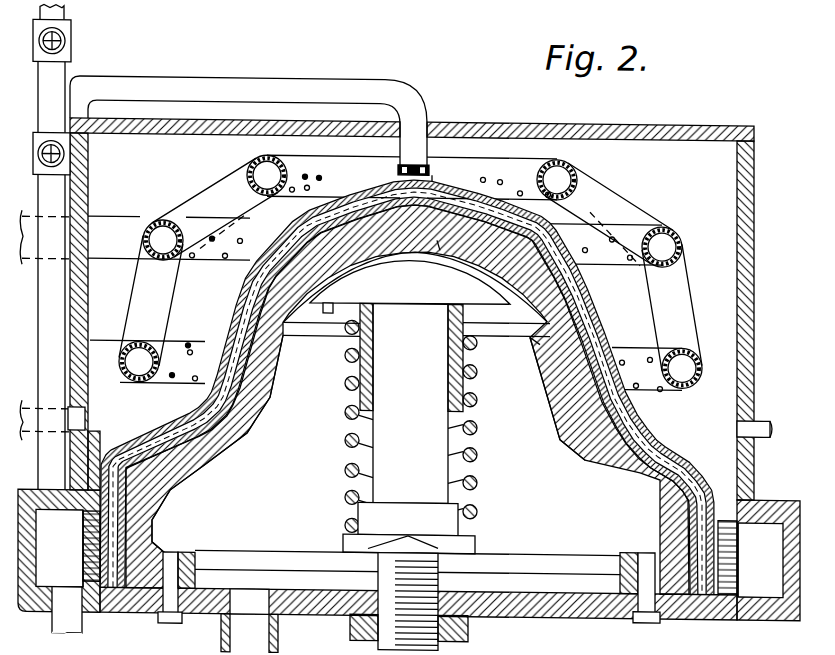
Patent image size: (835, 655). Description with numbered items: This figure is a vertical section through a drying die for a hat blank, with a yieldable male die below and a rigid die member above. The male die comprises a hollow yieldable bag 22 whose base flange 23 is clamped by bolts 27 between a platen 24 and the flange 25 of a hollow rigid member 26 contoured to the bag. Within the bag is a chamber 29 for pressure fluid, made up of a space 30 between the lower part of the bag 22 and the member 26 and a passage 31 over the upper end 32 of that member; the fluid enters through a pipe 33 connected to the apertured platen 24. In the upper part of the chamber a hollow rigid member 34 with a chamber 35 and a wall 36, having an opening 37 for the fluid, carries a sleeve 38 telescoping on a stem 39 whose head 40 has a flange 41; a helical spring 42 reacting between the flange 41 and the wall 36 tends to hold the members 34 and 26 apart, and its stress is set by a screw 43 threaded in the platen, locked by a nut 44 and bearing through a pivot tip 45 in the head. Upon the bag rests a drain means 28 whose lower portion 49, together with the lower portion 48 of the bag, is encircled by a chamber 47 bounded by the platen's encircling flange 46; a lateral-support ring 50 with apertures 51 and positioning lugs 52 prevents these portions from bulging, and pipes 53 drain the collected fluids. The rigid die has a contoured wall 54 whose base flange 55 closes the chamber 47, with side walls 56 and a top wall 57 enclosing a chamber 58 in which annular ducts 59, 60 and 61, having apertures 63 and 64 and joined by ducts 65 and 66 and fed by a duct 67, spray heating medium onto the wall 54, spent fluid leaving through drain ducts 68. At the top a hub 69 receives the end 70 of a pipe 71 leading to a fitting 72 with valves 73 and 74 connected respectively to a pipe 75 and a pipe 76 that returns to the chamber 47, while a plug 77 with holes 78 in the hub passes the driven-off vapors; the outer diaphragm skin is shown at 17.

The diaphragm 17 is at (653, 424).
The hollow member or bag 22 is at (252, 409).
The flange 23 is at (676, 590).
The platen 24 is at (601, 605).
The flange 25 is at (634, 548).
The hollow rigid member 26 is at (563, 433).
The bolts 27 is at (638, 622).
The drain means or fluid escape means 28 is at (566, 186).
The chamber 29 is at (300, 468).
The space 30 is at (622, 457).
The passage 31 is at (488, 322).
The upper end 32 is at (543, 343).
The pipe or duct 33 is at (222, 612).
The hollow rigid member 34 is at (437, 235).
The chamber 35 is at (403, 286).
The wall 36 is at (482, 330).
The opening 37 is at (332, 301).
The sleeve 38 is at (350, 369).
The stem 39 is at (411, 403).
The head 40 is at (433, 527).
The flange 41 is at (510, 549).
The helical spring 42 is at (345, 493).
The screw 43 is at (350, 621).
The lock nut 44 is at (508, 629).
The pivot tip 45 is at (386, 540).
The encircling flange 46 is at (760, 560).
The chamber 47 is at (80, 557).
The lower portion 48 is at (690, 547).
The lower portion 49 is at (683, 502).
The lateral-support ring 50 is at (83, 532).
The apertures 51 is at (87, 571).
The lugs 52 is at (772, 545).
The pipes or ducts 53 is at (80, 626).
The contoured wall 54 is at (625, 280).
The base flange 55 is at (758, 497).
The side walls 56 is at (427, 295).
The cover plate or top wall 57 is at (724, 124).
The chamber 58 is at (687, 189).
The annular duct 59 is at (258, 149).
The annular duct 60 is at (143, 238).
The annular duct 61 is at (137, 381).
The apertures 63 is at (186, 258).
The apertures 64 is at (347, 150).
The duct 65 is at (192, 200).
The duct 66 is at (135, 305).
The duct 67 is at (127, 215).
The outlet or drain ducts 68 is at (70, 407).
The hub or boss 69 is at (428, 115).
The end 70 is at (398, 163).
The duct or pipe 71 is at (242, 73).
The fitting 72 is at (52, 96).
The valve 73 is at (72, 34).
The valve 74 is at (55, 125).
The pipe or duct 75 is at (66, 14).
The pipe or duct 76 is at (50, 274).
The plug 77 is at (398, 171).
The holes or apertures 78 is at (432, 175).